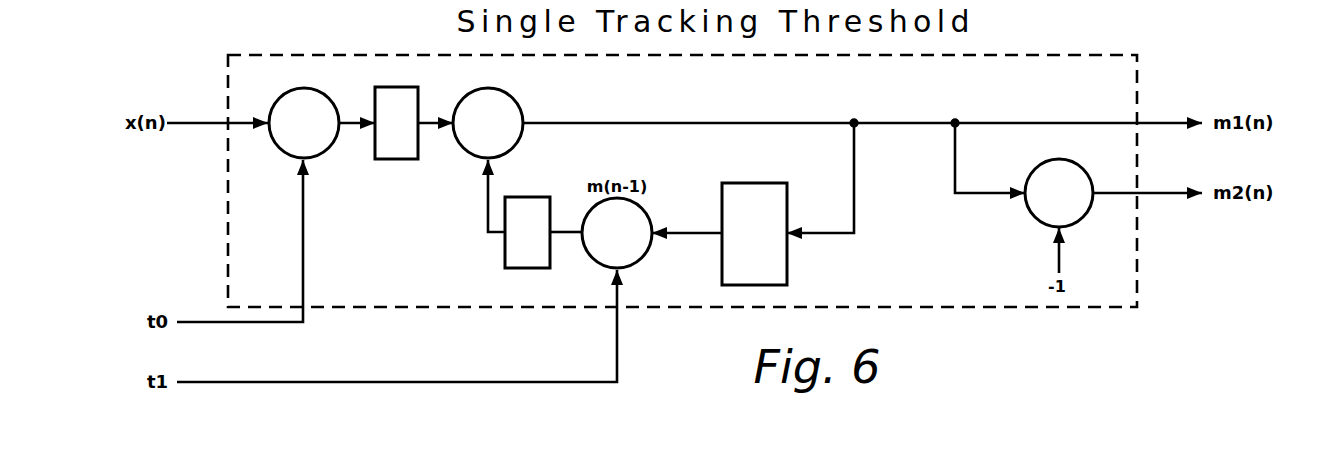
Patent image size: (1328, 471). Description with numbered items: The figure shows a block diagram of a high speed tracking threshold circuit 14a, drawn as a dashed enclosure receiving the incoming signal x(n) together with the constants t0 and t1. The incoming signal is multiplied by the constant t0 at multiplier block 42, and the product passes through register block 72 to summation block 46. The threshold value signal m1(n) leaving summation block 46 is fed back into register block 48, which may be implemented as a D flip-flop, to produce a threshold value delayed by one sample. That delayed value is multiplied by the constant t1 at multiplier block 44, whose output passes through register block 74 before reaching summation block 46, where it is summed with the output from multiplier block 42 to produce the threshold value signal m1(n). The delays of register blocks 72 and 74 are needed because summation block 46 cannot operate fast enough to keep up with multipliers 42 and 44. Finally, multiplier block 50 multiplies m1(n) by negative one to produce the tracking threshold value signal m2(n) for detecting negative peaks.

The multiplier block 42 is at (310, 88).
The register block 72 is at (405, 87).
The summation block 46 is at (495, 88).
The register block 74 is at (518, 268).
The multiplier block 44 is at (632, 265).
The register block 48 is at (787, 272).
The multiplier block 50 is at (1082, 221).
The single tracking threshold circuit 14a is at (1137, 284).